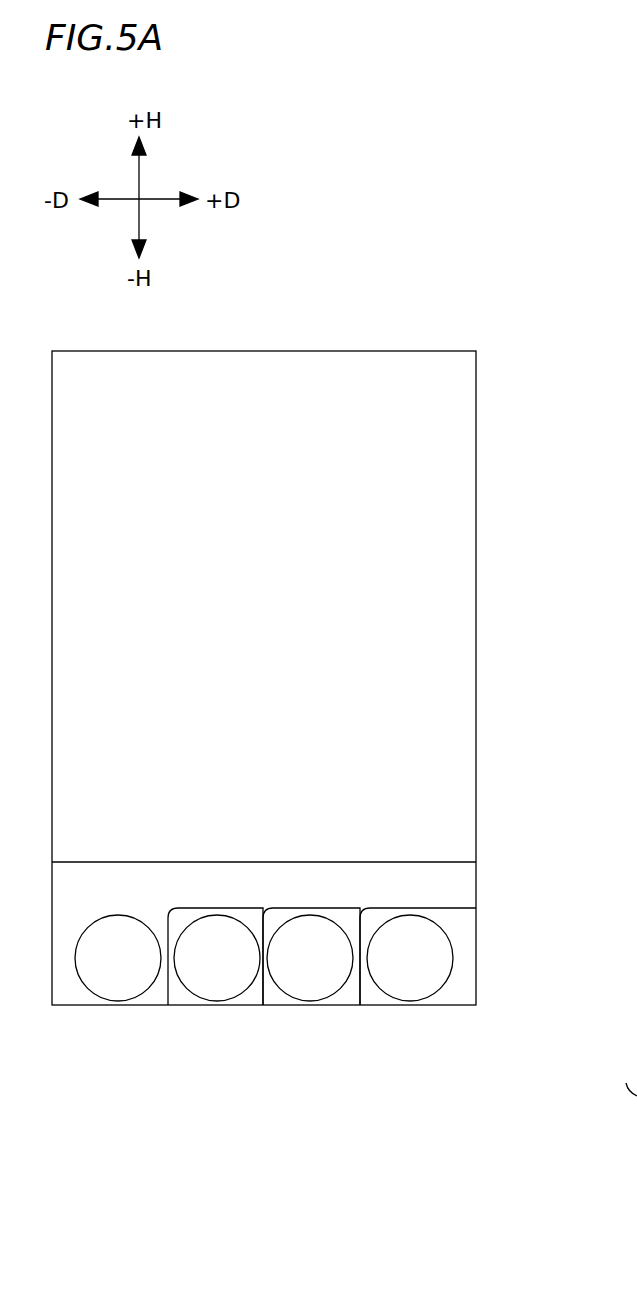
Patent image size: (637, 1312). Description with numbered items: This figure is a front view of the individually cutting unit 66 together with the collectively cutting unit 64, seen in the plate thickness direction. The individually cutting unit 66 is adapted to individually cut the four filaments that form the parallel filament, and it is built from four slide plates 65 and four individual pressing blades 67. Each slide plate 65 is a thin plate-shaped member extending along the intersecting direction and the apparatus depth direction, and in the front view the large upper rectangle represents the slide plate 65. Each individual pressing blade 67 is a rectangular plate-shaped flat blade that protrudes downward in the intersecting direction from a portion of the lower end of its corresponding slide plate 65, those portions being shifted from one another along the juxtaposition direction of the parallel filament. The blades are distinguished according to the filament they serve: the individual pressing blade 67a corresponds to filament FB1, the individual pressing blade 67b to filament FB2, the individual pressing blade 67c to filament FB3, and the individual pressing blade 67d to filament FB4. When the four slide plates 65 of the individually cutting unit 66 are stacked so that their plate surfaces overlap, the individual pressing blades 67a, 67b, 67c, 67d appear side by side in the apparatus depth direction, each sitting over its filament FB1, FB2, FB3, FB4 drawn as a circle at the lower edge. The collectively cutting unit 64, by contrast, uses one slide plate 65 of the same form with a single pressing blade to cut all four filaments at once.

The collectively cutting unit 64 is at (300, 678).
The slide plate 65 is at (460, 578).
The individually cutting unit 66 is at (318, 678).
The individual pressing blade 67 is at (275, 1061).
The individual pressing blade 67a is at (409, 1033).
The individual pressing blade 67b is at (309, 1033).
The individual pressing blade 67c is at (217, 1033).
The individual pressing blade 67d is at (139, 1036).
The filament FB1 is at (370, 1005).
The filament FB2 is at (275, 1005).
The filament FB3 is at (180, 1005).
The filament FB4 is at (82, 1005).